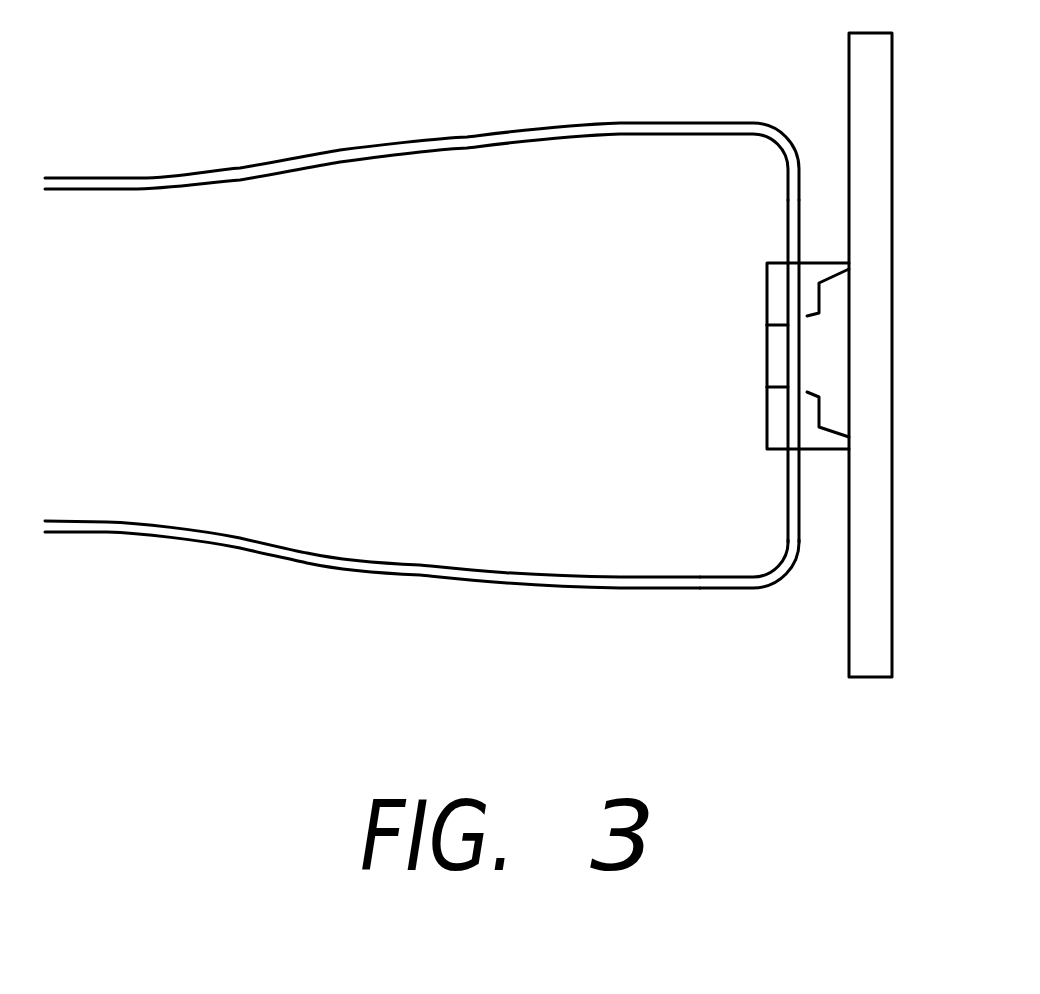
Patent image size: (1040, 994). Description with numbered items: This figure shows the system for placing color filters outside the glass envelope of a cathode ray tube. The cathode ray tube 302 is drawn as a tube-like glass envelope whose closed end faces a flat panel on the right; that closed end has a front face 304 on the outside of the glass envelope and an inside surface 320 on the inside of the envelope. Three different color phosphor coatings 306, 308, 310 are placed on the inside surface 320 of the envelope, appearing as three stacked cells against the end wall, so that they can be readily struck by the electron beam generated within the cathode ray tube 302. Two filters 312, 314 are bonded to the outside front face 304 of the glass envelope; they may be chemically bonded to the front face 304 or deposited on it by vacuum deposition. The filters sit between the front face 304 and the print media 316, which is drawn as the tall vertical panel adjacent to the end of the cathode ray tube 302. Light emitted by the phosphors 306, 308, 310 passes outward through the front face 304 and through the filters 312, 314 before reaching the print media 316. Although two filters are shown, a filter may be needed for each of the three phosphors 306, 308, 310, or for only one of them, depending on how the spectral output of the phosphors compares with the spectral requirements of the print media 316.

The cathode ray tube 302 is at (533, 138).
The front face 304 is at (798, 210).
The first color phosphor coating 306 is at (775, 280).
The second color phosphor coating 308 is at (779, 355).
The third color phosphor coating 310 is at (775, 437).
The first filter 312 is at (807, 316).
The second filter 314 is at (807, 392).
The print media 316 is at (890, 647).
The inside surface 320 is at (787, 540).